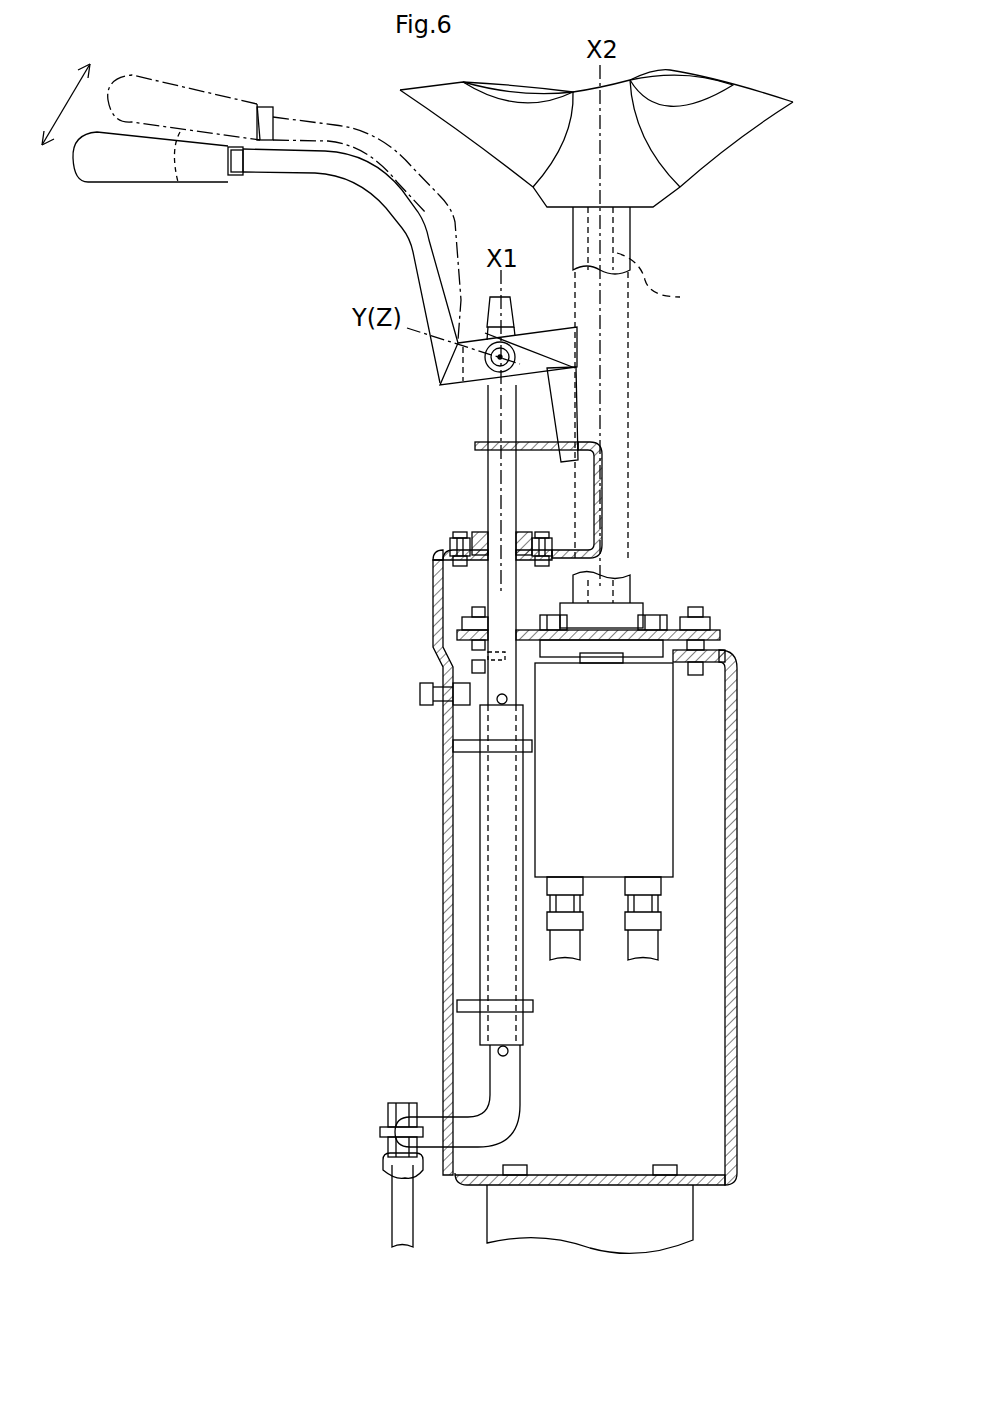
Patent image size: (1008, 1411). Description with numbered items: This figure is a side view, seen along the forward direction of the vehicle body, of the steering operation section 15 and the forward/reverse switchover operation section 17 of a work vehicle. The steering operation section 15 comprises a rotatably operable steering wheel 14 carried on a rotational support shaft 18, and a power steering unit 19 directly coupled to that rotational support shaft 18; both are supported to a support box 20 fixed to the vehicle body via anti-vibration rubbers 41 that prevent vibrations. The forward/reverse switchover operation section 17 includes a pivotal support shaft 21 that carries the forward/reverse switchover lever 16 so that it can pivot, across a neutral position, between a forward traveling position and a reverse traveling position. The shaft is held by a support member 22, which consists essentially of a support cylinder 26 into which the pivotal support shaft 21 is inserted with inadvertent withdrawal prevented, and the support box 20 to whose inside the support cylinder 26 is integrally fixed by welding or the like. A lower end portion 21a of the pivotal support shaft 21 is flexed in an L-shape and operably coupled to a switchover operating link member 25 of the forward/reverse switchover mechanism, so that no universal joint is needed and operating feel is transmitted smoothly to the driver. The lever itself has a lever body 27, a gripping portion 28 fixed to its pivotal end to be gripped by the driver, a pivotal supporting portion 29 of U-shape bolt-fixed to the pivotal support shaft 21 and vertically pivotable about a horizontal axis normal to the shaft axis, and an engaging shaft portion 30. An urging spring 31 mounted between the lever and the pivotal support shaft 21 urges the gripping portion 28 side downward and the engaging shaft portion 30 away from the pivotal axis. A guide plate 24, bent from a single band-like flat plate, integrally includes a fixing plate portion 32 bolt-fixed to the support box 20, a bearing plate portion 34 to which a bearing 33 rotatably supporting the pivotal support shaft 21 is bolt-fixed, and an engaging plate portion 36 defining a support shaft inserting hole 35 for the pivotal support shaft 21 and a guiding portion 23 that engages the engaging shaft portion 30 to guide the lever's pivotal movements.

The steering wheel 14 is at (730, 140).
The steering operation section 15 is at (637, 223).
The forward/reverse switchover lever 16 is at (330, 190).
The forward/reverse switchover operation section 17 is at (418, 482).
The rotational support shaft 18 is at (665, 282).
The power steering unit 19 is at (663, 760).
The support box 20 is at (645, 951).
The pivotal support shaft 21 is at (492, 470).
The lower end portion 21a is at (437, 1113).
The support member 22 is at (590, 1179).
The guiding portion 23 is at (552, 452).
The guide plate 24 is at (603, 497).
The switchover operating link member 25 is at (397, 1232).
The support cylinder 26 is at (492, 867).
The lever body 27 is at (340, 157).
The gripping portion 28 is at (187, 130).
The pivotal supporting portion 29 is at (563, 342).
The engaging shaft portion 30 is at (565, 413).
The urging spring 31 is at (527, 330).
The fixing plate portion 32 is at (433, 608).
The bearing 33 is at (485, 537).
The bearing plate portion 34 is at (562, 548).
The support shaft inserting hole 35 is at (498, 443).
The engaging plate portion 36 is at (532, 443).
The anti-vibration rubbers 41 is at (457, 643).